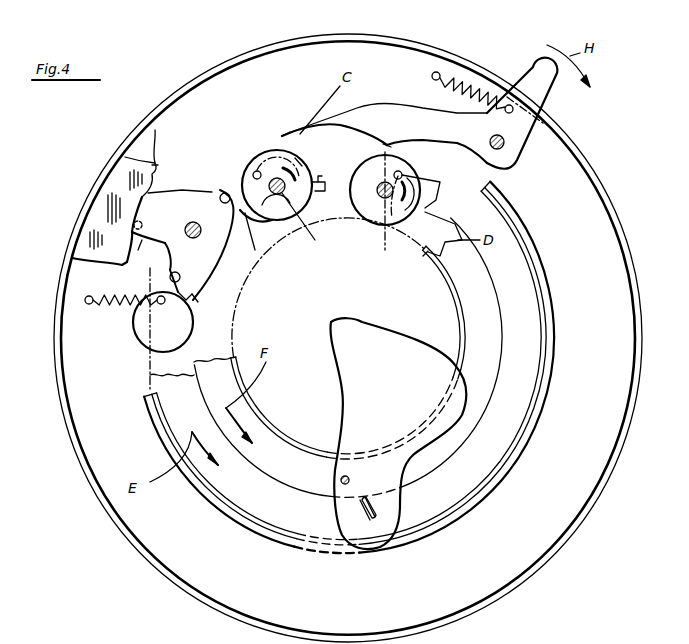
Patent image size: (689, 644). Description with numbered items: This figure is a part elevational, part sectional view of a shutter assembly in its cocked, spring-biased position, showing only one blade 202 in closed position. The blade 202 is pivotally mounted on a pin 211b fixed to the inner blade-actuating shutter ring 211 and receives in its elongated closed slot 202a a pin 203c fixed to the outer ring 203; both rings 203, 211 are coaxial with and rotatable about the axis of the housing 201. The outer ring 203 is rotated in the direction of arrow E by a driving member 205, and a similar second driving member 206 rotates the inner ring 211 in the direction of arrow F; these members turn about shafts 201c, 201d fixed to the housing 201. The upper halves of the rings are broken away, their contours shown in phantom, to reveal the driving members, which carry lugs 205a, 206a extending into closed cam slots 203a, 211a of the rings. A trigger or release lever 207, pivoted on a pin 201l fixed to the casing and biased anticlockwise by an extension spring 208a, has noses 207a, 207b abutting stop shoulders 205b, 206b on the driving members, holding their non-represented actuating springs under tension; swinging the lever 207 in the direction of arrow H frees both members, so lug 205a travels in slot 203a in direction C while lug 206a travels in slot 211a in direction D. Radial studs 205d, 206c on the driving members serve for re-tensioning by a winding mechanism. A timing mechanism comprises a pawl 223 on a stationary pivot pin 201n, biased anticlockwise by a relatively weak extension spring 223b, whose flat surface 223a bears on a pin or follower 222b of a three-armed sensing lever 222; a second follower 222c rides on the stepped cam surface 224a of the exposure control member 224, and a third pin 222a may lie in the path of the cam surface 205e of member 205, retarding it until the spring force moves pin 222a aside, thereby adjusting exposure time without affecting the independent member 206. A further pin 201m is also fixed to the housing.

The housing 201 is at (628, 165).
The shaft 201c is at (279, 195).
The shaft 201d is at (382, 198).
The pin 201l is at (504, 148).
The pivot pin for lever 222 201m is at (201, 236).
The stationary pivot pin 201n is at (190, 330).
The blade 202 is at (350, 373).
The elongated closed slot 202a is at (375, 505).
The outer ring 203 is at (535, 368).
The cam slot 203a is at (314, 223).
The pin 203c is at (366, 512).
The driving member 205 is at (246, 176).
The lug 205a is at (256, 171).
The stop shoulder 205b is at (297, 158).
The radial stud 205d is at (332, 172).
The cam surface 205e is at (255, 250).
The second driving member 206 is at (385, 201).
The lug 206a is at (432, 190).
The stop shoulder 206b is at (375, 134).
The radial stud 206c is at (450, 238).
The trigger or release lever 207 is at (413, 106).
The nose 207a is at (288, 128).
The nose 207b is at (388, 145).
The extension spring 208a is at (476, 84).
The inner blade-actuating shutter ring 211 is at (473, 333).
The cam slot 211a is at (423, 256).
The pin 211b is at (340, 478).
The sensing or key lever 222 is at (205, 212).
The pin 222a is at (222, 194).
The pin or follower 222b is at (181, 277).
The pin or follower 222c is at (143, 255).
The pawl 223 is at (140, 330).
The flat surface 223a is at (215, 299).
The extension spring 223b is at (108, 304).
The cam or control member 224 is at (106, 196).
The stepped cam surface 224a is at (156, 162).